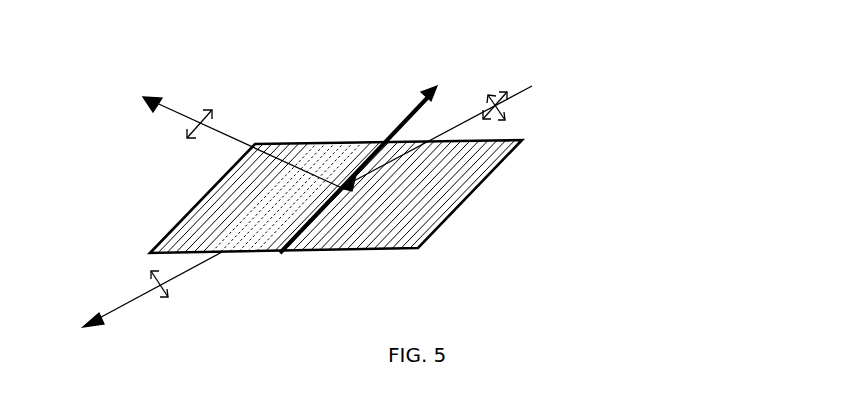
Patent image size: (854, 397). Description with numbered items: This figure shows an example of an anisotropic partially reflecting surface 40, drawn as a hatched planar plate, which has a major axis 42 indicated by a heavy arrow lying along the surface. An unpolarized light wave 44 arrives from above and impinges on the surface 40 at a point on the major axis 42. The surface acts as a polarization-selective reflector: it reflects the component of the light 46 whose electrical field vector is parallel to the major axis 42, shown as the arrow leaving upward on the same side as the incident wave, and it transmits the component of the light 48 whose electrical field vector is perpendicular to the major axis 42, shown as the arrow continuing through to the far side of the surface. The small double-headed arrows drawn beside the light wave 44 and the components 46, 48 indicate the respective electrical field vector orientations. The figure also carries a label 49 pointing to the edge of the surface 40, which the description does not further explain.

The anisotropic partially reflecting surface 40 is at (462, 206).
The major axis 42 is at (400, 120).
The unpolarized light wave 44 is at (520, 95).
The reflected component of the light 46 is at (162, 104).
The transmitted component of the light 48 is at (192, 270).
The edge of substrate 49 is at (420, 250).